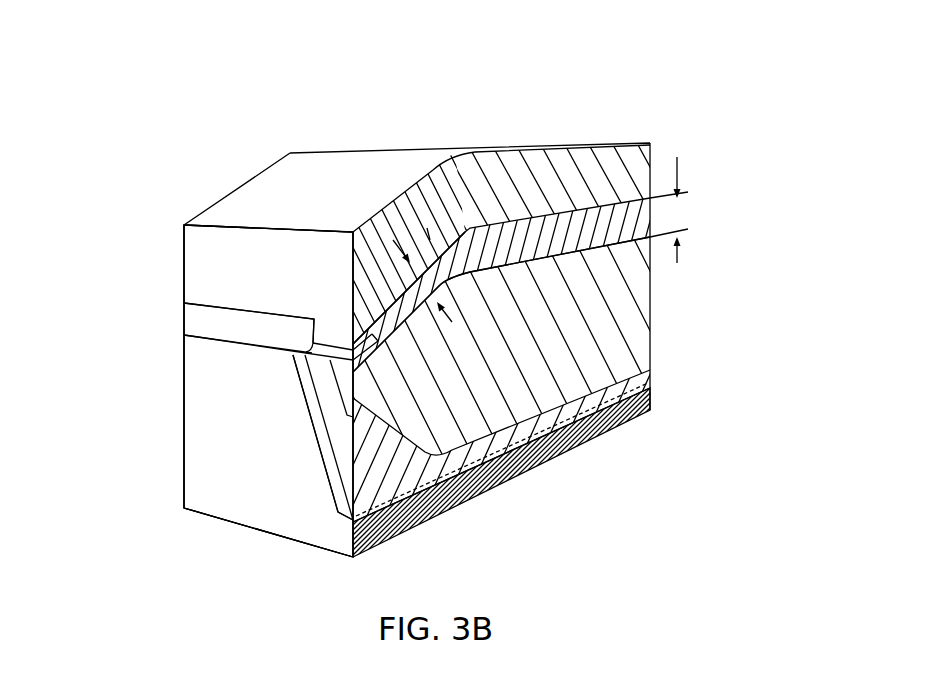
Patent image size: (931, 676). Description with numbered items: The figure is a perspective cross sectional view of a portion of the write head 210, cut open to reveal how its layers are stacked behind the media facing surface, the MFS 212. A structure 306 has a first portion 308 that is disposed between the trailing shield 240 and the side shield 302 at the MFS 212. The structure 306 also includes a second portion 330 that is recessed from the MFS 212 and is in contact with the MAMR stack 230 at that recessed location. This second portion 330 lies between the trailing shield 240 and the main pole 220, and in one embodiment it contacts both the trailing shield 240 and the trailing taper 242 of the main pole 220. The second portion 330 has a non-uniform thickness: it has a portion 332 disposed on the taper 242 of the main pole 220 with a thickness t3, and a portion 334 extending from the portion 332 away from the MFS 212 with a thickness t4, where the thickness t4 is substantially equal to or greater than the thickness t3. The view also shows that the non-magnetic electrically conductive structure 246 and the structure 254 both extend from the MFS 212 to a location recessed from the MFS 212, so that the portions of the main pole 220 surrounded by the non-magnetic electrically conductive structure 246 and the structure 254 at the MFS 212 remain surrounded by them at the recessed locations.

The write head 210 is at (155, 163).
The MFS 212 is at (205, 257).
The side shield 302 is at (270, 447).
The structure 306 is at (170, 311).
The first portion 308 is at (207, 331).
The structure 254 is at (338, 517).
The trailing shield 240 is at (628, 158).
The trailing taper 242 is at (413, 292).
The portion 332 is at (391, 289).
The second portion 330 is at (418, 301).
The portion 334 is at (595, 245).
The MAMR stack 230 is at (390, 352).
The main pole 220 is at (650, 332).
The non-magnetic electrically conductive structure 246 is at (633, 392).
The thickness t3 is at (422, 264).
The thickness t4 is at (683, 211).